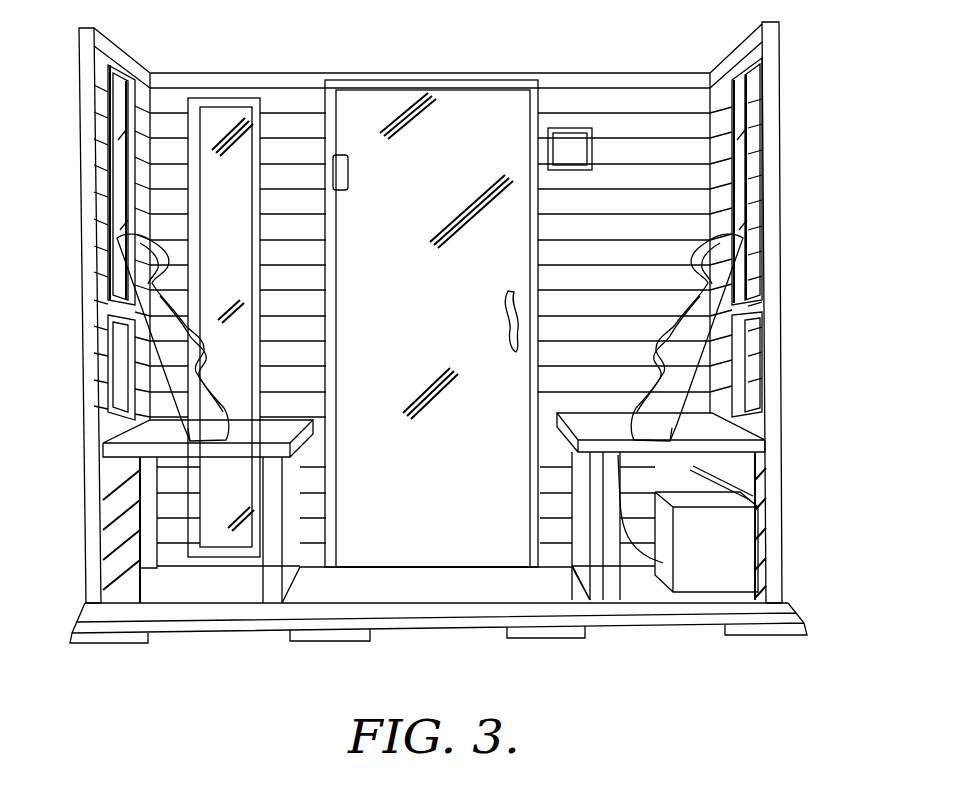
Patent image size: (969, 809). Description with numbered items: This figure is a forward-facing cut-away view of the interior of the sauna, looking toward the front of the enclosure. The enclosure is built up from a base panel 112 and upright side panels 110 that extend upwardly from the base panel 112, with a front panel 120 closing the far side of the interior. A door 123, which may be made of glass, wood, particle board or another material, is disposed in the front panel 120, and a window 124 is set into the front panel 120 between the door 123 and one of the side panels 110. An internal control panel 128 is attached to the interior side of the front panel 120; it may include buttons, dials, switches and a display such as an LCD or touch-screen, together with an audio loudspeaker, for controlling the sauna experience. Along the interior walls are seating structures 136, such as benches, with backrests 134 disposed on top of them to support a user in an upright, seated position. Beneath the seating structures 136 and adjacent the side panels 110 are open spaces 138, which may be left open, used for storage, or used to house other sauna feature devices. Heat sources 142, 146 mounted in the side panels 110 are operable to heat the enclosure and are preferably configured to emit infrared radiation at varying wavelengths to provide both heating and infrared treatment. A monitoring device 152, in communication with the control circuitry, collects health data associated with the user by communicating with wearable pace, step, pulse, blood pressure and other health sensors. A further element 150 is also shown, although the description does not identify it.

The side panel 110 is at (84, 246).
The base panel 112 is at (402, 590).
The front panel 120 is at (650, 105).
The door 123 is at (462, 103).
The window 124 is at (223, 112).
The control panel 128 is at (575, 140).
The backrest 134 is at (157, 324).
The seating structure 136 is at (760, 448).
The open space 138 is at (148, 552).
The heat source 142 is at (108, 186).
The heat source 146 is at (117, 391).
The heater 150 is at (750, 542).
The monitoring device 152 is at (567, 427).